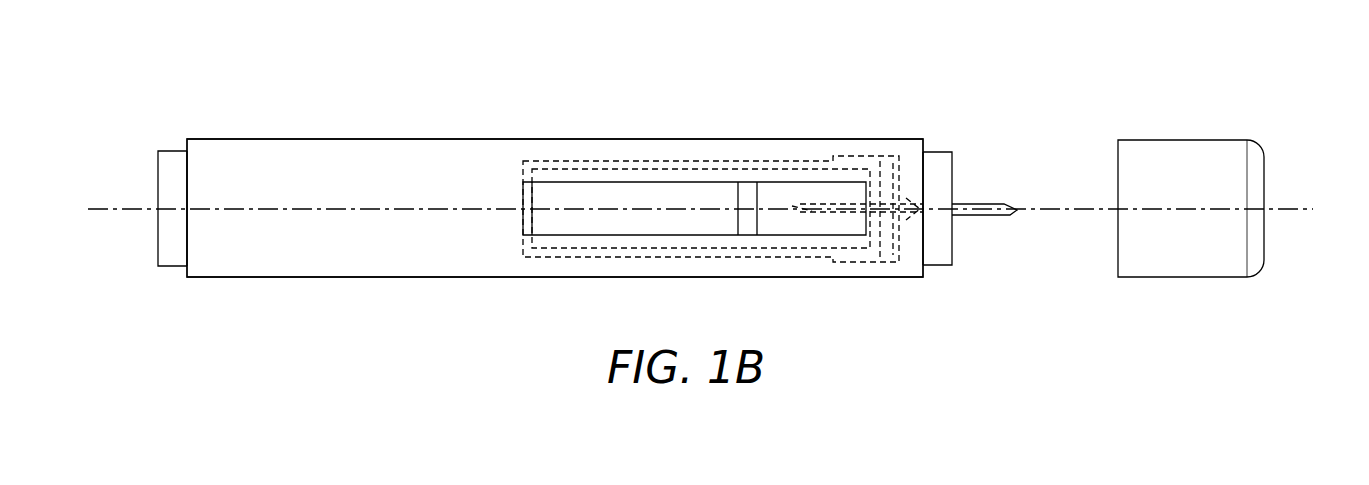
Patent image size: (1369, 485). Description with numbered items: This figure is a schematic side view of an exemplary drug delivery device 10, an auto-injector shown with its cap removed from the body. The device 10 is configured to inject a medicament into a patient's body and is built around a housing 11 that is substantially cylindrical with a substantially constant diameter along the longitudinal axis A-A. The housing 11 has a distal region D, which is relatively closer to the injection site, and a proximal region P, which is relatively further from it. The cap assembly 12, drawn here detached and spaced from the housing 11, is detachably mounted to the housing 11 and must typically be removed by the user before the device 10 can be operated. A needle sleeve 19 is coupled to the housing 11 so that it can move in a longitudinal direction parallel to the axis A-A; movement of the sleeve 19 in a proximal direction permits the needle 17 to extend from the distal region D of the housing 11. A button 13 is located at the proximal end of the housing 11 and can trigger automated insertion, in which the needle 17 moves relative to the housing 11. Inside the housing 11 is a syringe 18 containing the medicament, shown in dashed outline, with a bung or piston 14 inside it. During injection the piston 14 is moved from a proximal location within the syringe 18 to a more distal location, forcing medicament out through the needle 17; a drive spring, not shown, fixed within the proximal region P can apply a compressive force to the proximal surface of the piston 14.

The drug delivery device 10 is at (882, 101).
The housing 11 is at (745, 149).
The cap assembly 12 is at (1185, 150).
The button 13 is at (172, 258).
The piston 14 is at (750, 228).
The needle 17 is at (990, 200).
The syringe 18 is at (590, 258).
The needle sleeve 19 is at (945, 152).
The longitudinal axis A is at (699, 209).
The proximal region P is at (205, 268).
The distal region D is at (908, 267).